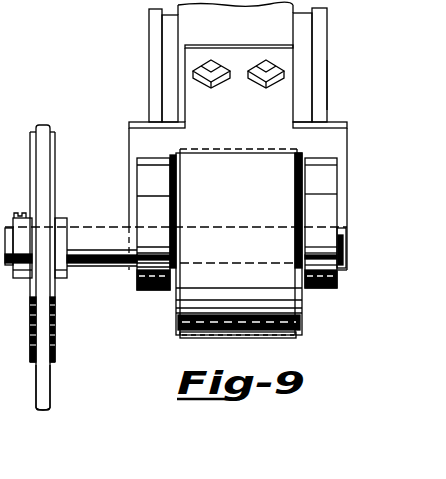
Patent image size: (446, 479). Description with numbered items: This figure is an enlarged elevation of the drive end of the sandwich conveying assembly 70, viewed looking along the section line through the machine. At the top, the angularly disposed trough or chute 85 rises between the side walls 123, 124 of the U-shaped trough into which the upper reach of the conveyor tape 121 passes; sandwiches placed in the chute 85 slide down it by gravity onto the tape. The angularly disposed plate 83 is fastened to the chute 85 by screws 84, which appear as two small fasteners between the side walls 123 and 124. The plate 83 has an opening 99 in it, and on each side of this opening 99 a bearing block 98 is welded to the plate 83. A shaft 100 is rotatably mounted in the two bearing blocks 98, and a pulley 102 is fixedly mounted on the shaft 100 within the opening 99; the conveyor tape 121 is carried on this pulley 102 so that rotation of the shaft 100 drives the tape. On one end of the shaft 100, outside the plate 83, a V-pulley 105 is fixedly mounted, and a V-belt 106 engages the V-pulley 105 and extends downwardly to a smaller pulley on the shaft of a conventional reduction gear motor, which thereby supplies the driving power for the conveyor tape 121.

The support assembly 70 is at (327, 95).
The angularly disposed plate 83 is at (347, 143).
The screws 84 is at (262, 83).
The trough or chute 85 is at (303, 32).
The bearing blocks 98 is at (142, 205).
The opening 99 is at (258, 150).
The shaft 100 is at (98, 264).
The pulley 102 is at (303, 325).
The V-pulley 105 is at (55, 145).
The V-belt 106 is at (52, 387).
The conveyor tape 121 is at (235, 338).
The side wall 123 is at (327, 63).
The side wall 124 is at (149, 58).